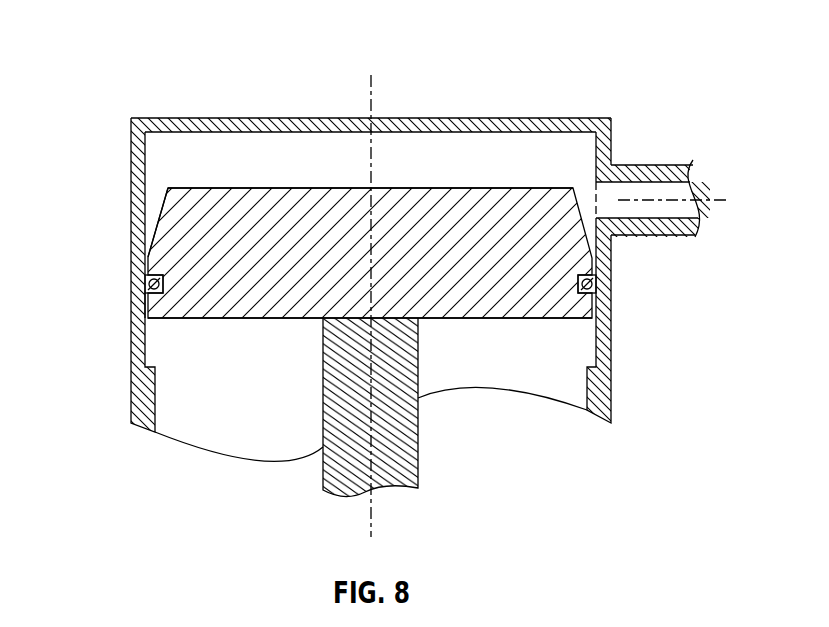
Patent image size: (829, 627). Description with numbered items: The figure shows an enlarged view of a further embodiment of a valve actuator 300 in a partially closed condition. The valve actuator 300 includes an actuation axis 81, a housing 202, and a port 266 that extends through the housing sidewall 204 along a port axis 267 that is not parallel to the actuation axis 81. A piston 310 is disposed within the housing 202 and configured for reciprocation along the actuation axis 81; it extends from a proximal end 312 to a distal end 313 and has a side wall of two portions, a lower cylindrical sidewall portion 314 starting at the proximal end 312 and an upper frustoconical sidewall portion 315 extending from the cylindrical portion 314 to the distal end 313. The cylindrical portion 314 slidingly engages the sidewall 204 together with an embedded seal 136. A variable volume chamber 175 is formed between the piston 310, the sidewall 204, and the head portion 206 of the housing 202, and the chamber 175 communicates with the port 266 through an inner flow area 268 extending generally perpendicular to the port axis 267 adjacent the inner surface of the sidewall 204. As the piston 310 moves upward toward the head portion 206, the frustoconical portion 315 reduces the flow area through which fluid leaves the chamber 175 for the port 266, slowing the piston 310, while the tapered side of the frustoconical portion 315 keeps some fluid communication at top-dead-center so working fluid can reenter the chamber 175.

The housing 202 is at (155, 118).
The valve actuator 300 is at (236, 118).
The head portion 206 is at (318, 118).
The actuation axis 81 is at (374, 84).
The variable volume chamber 175 is at (493, 143).
The housing sidewall 204 is at (140, 160).
The frustoconical sidewall portion 315 is at (163, 215).
The distal end 313 is at (277, 188).
The piston 310 is at (172, 242).
The seal 136 is at (147, 276).
The cylindrical sidewall portion 314 is at (145, 306).
The proximal end 312 is at (242, 320).
The port 266 is at (672, 172).
The port axis 267 is at (715, 200).
The inner flow area 268 is at (605, 218).